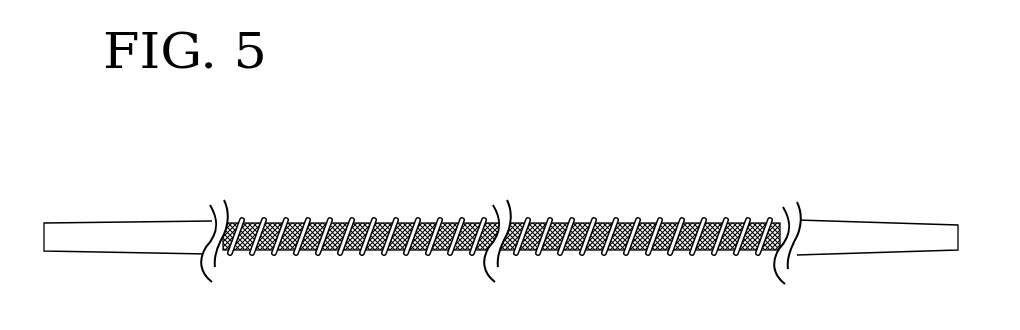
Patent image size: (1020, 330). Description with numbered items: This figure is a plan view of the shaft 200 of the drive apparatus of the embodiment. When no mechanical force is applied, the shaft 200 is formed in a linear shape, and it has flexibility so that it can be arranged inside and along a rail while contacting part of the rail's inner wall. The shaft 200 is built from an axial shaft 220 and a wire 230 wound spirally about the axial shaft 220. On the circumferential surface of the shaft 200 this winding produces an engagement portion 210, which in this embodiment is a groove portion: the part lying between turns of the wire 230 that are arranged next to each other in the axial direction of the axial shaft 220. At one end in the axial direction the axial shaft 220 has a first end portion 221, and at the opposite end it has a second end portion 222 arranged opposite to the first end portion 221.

The shaft 200 is at (501, 204).
The engagement portion 210 is at (501, 220).
The axial shaft 220 is at (588, 250).
The wire 230 is at (615, 222).
The first end portion 221 is at (915, 237).
The second end portion 222 is at (152, 238).